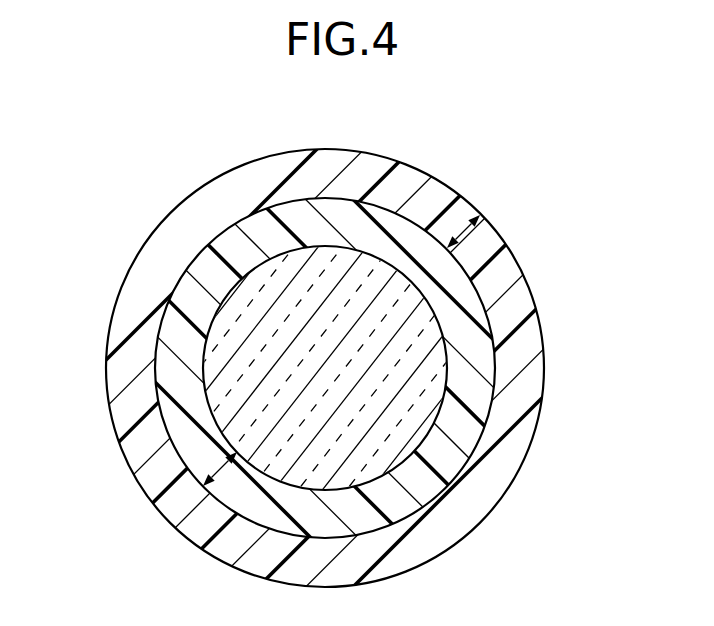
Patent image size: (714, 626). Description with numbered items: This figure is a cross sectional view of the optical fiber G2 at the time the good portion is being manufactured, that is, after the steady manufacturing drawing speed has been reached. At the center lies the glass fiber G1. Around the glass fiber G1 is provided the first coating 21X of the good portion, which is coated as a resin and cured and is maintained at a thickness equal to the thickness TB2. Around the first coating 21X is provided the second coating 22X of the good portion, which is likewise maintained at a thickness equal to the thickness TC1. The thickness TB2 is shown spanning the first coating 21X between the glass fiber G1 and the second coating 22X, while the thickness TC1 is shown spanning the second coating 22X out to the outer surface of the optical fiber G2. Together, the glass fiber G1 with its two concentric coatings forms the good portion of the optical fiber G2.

The glass fiber G1 is at (378, 437).
The optical fiber G2 is at (531, 230).
The first coating in the good portion 21X is at (467, 333).
The second coating in the good portion 22X is at (210, 526).
The thickness of the second coating TC1 is at (462, 232).
The thickness of the first coating TB2 is at (220, 472).